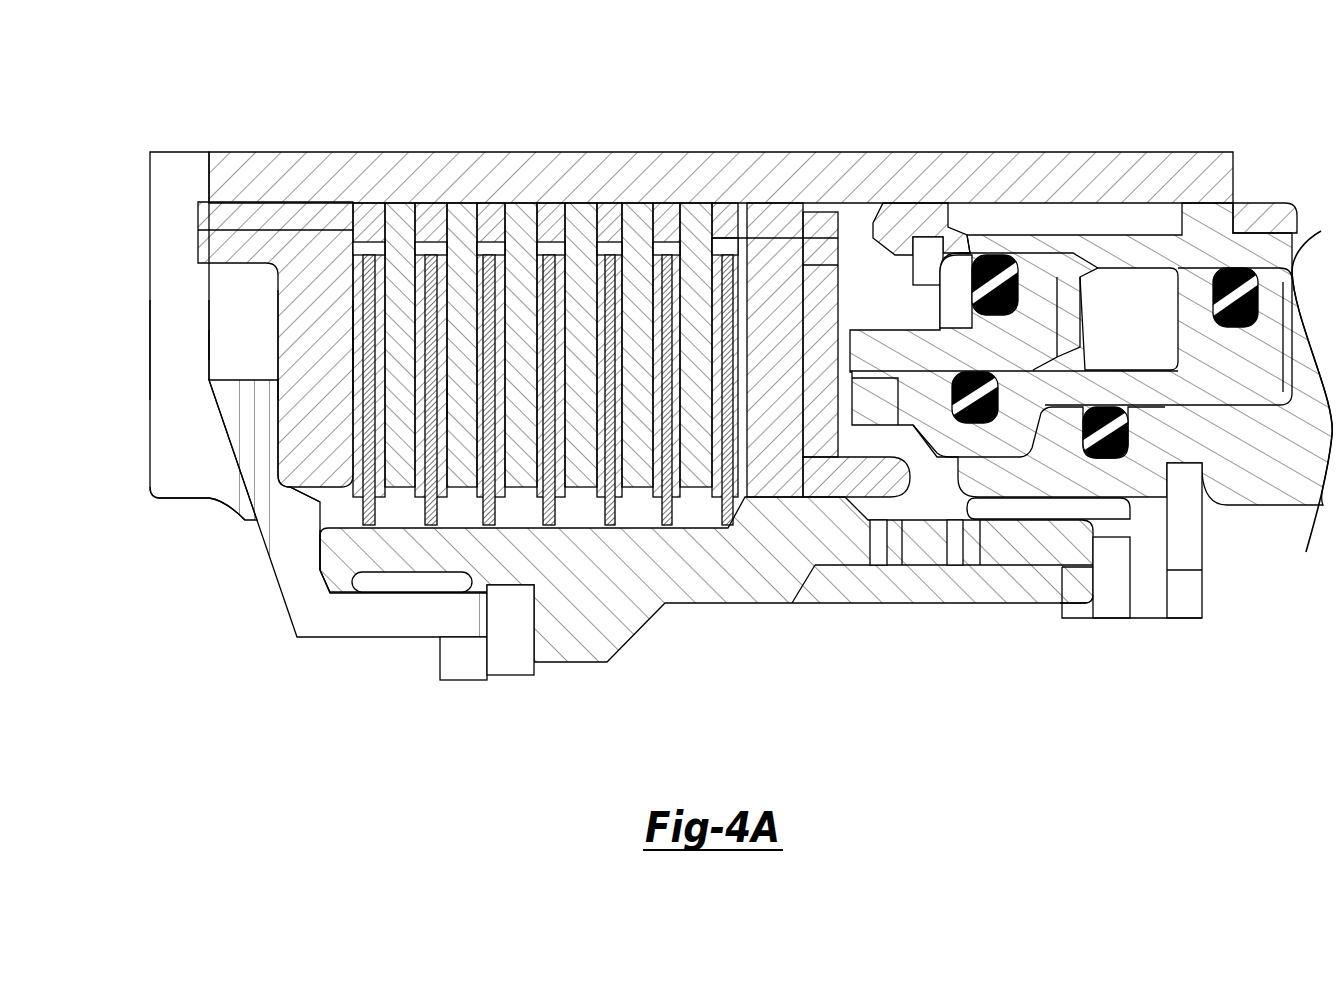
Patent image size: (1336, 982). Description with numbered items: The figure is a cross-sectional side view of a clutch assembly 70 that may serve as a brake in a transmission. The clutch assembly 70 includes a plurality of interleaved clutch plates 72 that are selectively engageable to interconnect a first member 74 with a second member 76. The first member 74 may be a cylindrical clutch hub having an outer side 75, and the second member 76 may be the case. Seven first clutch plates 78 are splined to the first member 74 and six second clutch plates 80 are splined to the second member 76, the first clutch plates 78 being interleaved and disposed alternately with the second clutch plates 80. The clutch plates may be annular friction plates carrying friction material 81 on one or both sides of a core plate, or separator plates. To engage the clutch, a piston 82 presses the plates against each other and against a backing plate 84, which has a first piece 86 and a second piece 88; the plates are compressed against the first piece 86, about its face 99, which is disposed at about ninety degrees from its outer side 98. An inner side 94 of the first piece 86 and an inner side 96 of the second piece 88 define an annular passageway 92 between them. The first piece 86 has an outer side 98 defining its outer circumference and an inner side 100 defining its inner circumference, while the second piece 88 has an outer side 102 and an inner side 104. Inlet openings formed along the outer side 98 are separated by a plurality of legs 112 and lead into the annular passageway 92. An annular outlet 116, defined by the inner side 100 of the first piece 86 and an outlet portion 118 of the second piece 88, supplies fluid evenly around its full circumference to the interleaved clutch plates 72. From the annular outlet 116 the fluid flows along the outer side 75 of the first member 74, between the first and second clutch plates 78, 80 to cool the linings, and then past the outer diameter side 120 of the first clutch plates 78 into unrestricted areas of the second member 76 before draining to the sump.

The clutch assembly 70 is at (697, 397).
The plurality of interleaved clutch plates 72 is at (274, 366).
The first member 74 is at (696, 609).
The outer side 75 is at (705, 487).
The second member 76 is at (790, 176).
The first clutch plates 78 is at (369, 525).
The second clutch plates 80 is at (400, 215).
The friction material 81 is at (355, 380).
The piston 82 is at (1130, 370).
The backing plate 84 is at (122, 336).
The first piece 86 is at (279, 294).
The second piece 88 is at (164, 308).
The annular passageway 92 is at (255, 380).
The inner side 94 is at (275, 322).
The inner side 96 is at (213, 338).
The outer side 98 is at (279, 294).
The face 99 is at (358, 326).
The inner side 100 is at (300, 493).
The outer side 102 is at (180, 151).
The inner side 104 is at (335, 638).
The legs 112 is at (205, 215).
The annular outlet 116 is at (310, 508).
The outlet portion 118 is at (240, 517).
The outer diameter side 120 is at (373, 255).